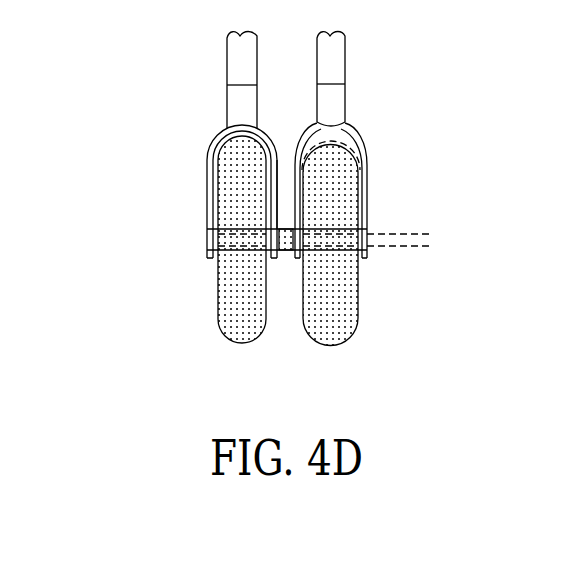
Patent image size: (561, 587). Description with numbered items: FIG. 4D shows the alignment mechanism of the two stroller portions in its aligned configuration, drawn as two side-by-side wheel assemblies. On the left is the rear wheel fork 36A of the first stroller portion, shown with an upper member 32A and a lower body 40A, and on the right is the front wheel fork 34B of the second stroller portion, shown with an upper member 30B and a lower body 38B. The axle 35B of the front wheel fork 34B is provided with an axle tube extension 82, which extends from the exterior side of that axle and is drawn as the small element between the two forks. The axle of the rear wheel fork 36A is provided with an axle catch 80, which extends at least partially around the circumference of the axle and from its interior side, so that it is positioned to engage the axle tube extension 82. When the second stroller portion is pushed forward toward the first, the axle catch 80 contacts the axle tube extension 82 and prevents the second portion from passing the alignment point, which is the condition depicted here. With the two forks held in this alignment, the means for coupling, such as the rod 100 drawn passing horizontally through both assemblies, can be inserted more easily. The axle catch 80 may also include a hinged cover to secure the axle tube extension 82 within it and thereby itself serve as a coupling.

The first lead wire 32A is at (227, 47).
The second lead wire 30B is at (345, 47).
The rear wheel fork 36A is at (207, 184).
The front wheel fork 34B is at (367, 182).
The axle 35B is at (336, 262).
The first electrode body 40A is at (235, 318).
The second electrode body 38B is at (347, 318).
The rod 100 is at (432, 243).
The axle tube extension 82 is at (283, 260).
The axle catch 80 is at (283, 150).